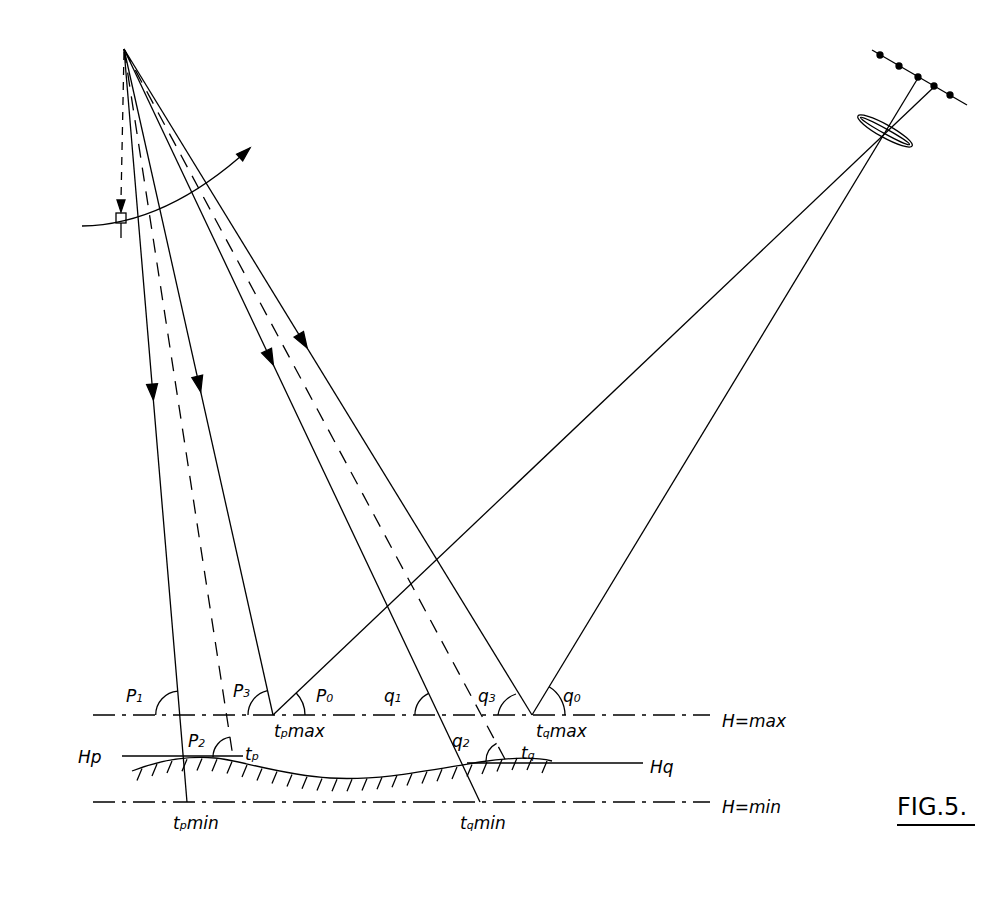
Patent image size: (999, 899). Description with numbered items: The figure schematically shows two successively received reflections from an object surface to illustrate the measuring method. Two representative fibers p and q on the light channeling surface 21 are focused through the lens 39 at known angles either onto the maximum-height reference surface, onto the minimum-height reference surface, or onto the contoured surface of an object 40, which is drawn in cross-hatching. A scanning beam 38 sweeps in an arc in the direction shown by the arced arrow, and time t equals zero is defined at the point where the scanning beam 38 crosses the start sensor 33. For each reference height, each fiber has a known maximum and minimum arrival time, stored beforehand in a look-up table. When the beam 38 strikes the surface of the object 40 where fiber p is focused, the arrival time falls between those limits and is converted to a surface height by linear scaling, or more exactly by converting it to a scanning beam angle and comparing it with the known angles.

The light channeling surface 21 is at (872, 50).
The start sensor 33 is at (114, 218).
The scanning beam 38 is at (147, 357).
The lens 39 is at (906, 147).
The object 40 is at (547, 760).